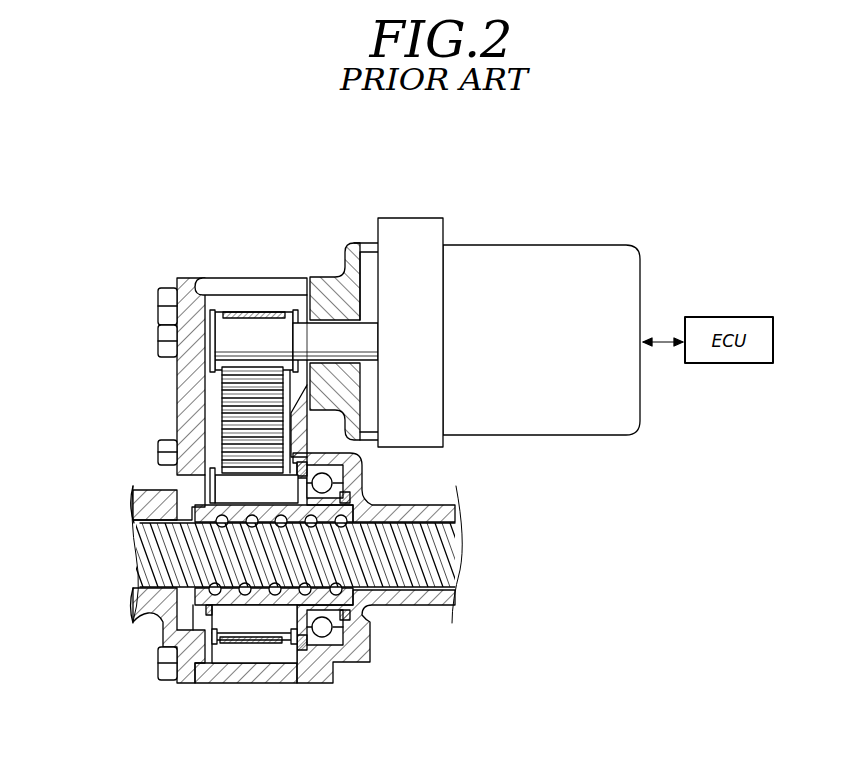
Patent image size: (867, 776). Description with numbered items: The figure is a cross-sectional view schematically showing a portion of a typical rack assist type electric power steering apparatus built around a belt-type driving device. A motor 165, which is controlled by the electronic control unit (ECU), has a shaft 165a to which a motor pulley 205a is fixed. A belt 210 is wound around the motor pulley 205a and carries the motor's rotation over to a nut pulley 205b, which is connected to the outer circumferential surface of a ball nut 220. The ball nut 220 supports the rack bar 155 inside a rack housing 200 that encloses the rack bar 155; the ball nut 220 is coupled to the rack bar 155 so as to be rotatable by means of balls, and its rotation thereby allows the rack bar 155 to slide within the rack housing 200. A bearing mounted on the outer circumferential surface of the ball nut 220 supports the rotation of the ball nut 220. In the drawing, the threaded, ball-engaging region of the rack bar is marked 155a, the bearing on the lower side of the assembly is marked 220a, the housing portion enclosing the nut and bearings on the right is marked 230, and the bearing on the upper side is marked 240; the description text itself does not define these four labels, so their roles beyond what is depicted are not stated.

The rack bar 155 is at (150, 566).
The screw thread portion 155a is at (418, 577).
The motor 165 is at (541, 257).
The shaft 165a is at (333, 330).
The rack housing 200 is at (252, 679).
The motor pulley 205a is at (253, 327).
The nut pulley 205b is at (240, 626).
The belt 210 is at (222, 410).
The ball nut 220 is at (222, 505).
The lower bearing 220a is at (313, 613).
The housing cover 230 is at (345, 618).
The upper bearing 240 is at (342, 484).